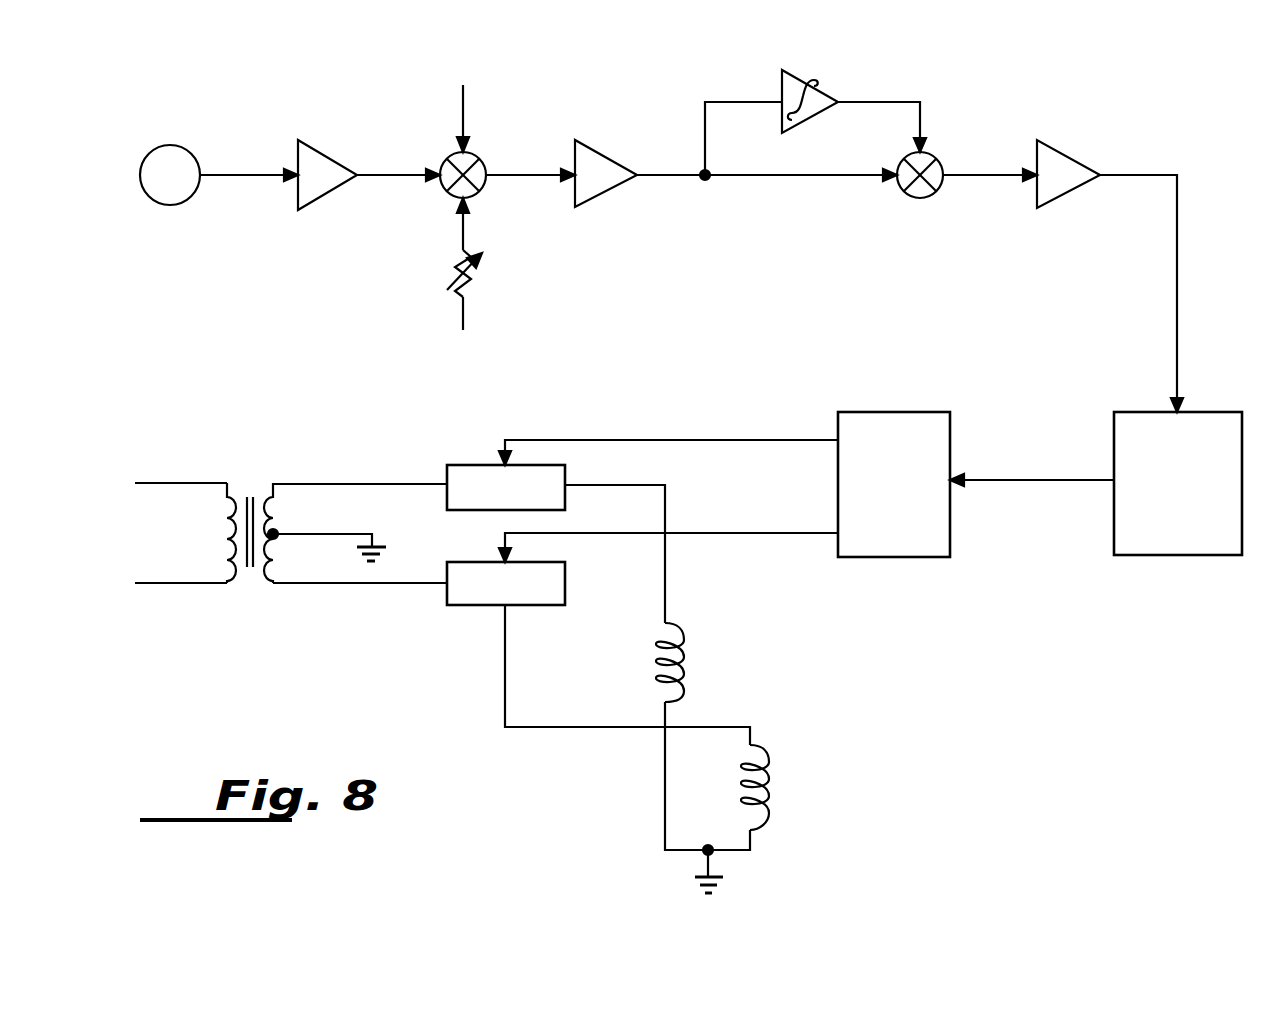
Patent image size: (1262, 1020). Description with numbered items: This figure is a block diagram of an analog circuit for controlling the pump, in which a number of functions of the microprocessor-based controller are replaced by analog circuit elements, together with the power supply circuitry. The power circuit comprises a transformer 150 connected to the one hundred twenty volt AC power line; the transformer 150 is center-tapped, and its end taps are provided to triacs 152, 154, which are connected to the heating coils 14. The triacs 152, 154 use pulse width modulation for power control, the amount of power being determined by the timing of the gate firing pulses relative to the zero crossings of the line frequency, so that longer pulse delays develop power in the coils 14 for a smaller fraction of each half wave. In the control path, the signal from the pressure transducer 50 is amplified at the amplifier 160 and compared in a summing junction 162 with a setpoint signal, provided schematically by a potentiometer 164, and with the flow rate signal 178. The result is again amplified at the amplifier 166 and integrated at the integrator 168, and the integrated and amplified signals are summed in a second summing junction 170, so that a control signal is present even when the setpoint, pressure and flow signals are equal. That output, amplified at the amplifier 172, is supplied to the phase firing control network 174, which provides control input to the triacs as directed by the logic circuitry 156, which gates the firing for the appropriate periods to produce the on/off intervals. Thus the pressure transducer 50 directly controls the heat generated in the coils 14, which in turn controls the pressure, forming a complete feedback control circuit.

The heating coils 14 is at (680, 680).
The pressure transducer 50 is at (148, 173).
The transformer 150 is at (251, 594).
The triac 152 is at (467, 595).
The triac 154 is at (455, 463).
The logic circuitry 156 is at (935, 523).
The amplifier 160 is at (317, 168).
The summing junction 162 is at (472, 150).
The potentiometer 164 is at (477, 270).
The amplifier 166 is at (593, 168).
The integrator 168 is at (813, 95).
The second summing junction 170 is at (913, 199).
The amplifier 172 is at (1057, 165).
The phase firing control network 174 is at (1163, 542).
The flow rate signal 178 is at (462, 112).